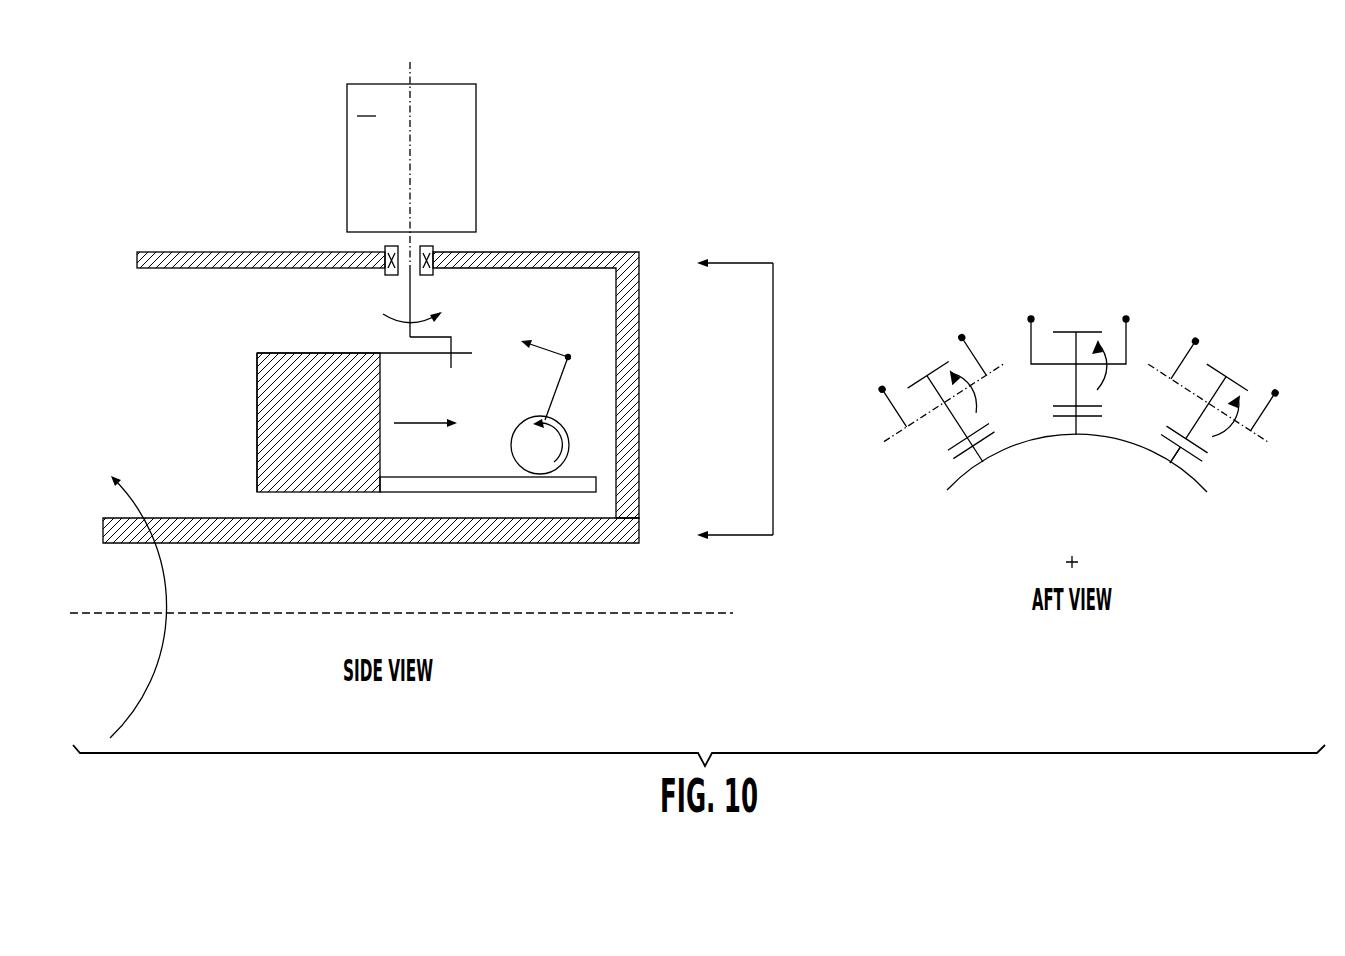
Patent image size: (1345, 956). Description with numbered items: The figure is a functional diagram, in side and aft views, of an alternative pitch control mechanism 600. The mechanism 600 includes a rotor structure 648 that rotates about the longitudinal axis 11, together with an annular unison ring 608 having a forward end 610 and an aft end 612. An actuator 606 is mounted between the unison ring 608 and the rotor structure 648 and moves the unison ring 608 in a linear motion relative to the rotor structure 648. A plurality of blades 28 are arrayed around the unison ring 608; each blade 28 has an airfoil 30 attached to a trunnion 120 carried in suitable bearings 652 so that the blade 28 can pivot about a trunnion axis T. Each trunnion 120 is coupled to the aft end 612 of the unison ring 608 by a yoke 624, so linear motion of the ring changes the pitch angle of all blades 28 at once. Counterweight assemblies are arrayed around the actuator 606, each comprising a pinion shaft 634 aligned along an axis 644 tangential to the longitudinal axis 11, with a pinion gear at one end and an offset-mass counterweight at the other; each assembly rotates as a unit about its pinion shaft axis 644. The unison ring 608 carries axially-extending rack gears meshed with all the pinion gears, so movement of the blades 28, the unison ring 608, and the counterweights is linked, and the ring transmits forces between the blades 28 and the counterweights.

The pitch control mechanism 600 is at (650, 158).
The blade 28 is at (485, 118).
The airfoil 30 is at (366, 103).
The trunnion axis T is at (412, 67).
The trunnion 120 is at (397, 242).
The bearings 652 is at (392, 276).
The aft end 612 is at (432, 357).
The yoke 624 is at (443, 333).
The unison ring 608 is at (316, 353).
The forward end 610 is at (257, 353).
The actuator 606 is at (246, 387).
The rotor structure 648 is at (205, 545).
The longitudinal axis 11 is at (565, 614).
The pinion shaft axis 644 is at (893, 442).
The pinion shaft 634 is at (918, 423).